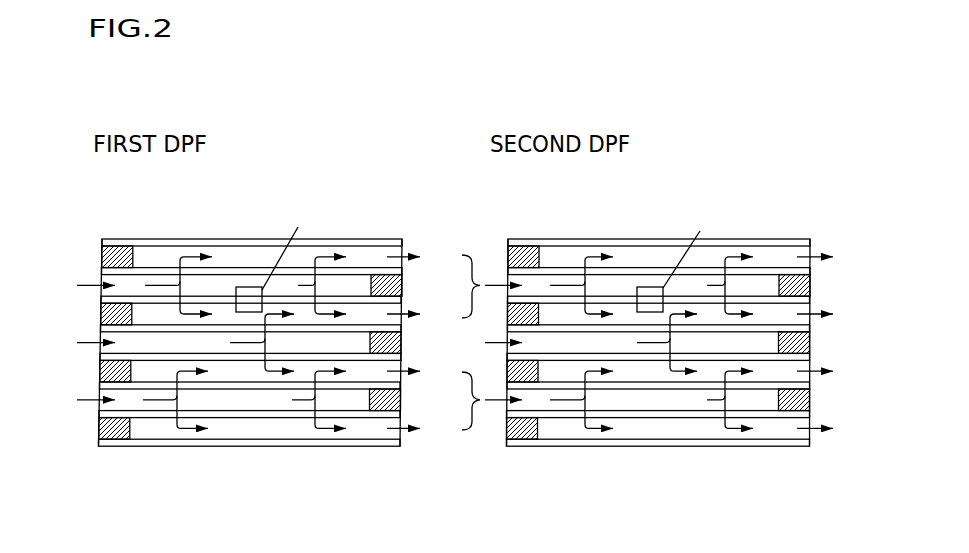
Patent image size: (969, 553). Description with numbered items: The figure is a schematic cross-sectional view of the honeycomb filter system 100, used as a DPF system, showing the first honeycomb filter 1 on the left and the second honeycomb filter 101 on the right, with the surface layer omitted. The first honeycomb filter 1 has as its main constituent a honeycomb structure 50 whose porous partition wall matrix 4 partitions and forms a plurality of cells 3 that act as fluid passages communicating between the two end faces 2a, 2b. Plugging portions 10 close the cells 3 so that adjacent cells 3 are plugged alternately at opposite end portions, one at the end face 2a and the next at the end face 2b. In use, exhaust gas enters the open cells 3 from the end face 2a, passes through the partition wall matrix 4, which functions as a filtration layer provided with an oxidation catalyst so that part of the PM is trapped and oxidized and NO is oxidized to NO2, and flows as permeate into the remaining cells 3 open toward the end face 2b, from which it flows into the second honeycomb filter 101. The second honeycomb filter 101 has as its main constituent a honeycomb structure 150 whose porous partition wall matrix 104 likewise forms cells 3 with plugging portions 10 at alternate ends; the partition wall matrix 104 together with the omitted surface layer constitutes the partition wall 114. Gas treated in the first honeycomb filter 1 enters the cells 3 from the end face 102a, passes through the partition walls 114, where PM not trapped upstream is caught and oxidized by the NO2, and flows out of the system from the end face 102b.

The honeycomb filter system 100 is at (761, 111).
The first honeycomb filter 1 is at (265, 231).
The honeycomb structure 50 is at (254, 340).
The end face 2a is at (101, 239).
The end face 2b is at (402, 239).
The cell 3 is at (222, 430).
The partition wall matrix 4 is at (247, 415).
The plugging portion 10 is at (100, 375).
The second honeycomb filter 101 is at (670, 232).
The honeycomb structure 150 is at (643, 344).
The end face 102a is at (508, 237).
The end face 102b is at (810, 237).
The partition wall matrix 104 is at (648, 415).
The partition wall 114 is at (659, 372).